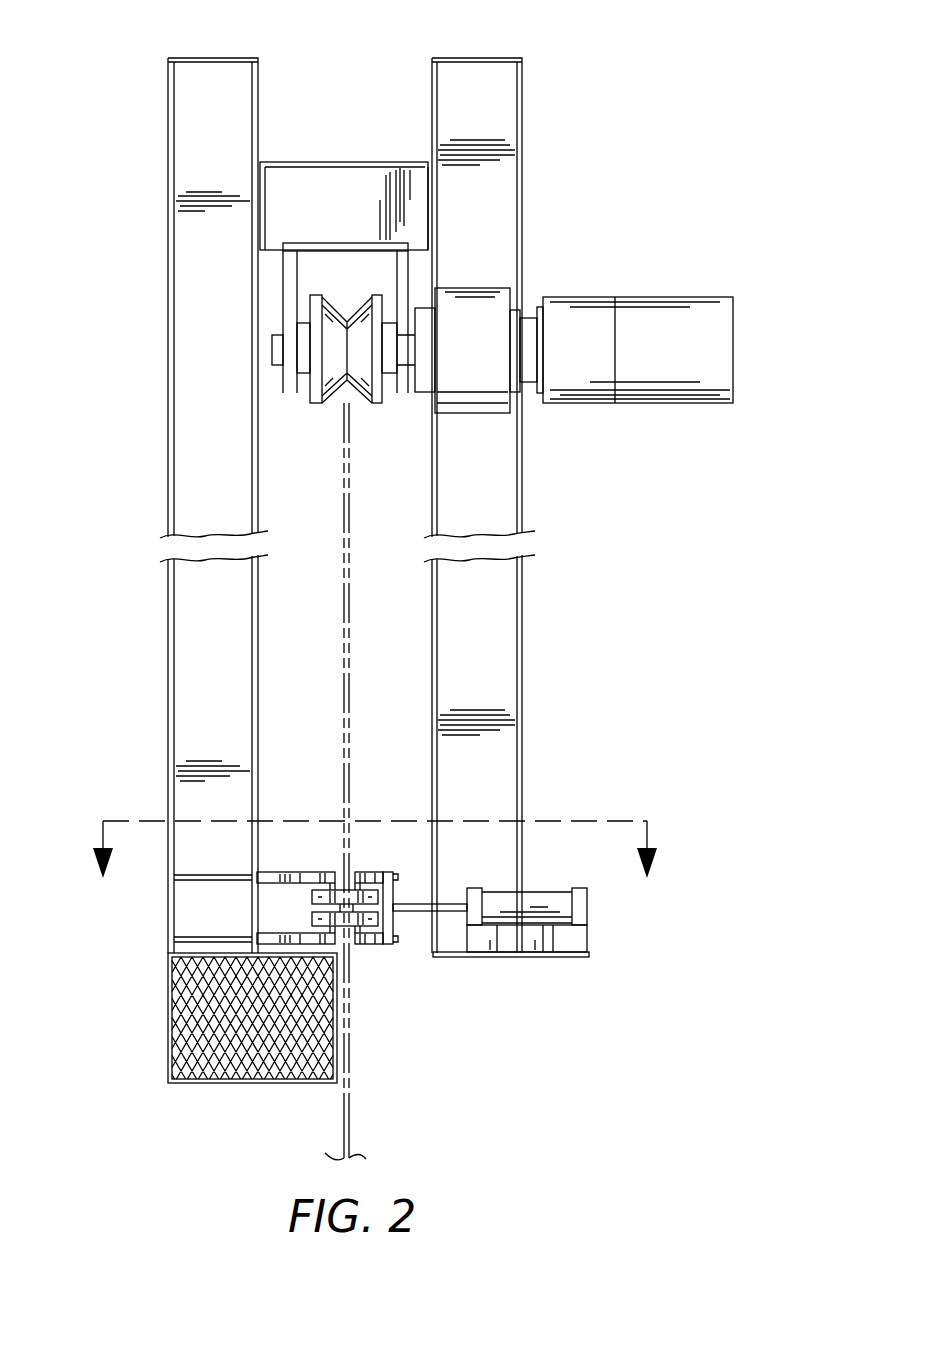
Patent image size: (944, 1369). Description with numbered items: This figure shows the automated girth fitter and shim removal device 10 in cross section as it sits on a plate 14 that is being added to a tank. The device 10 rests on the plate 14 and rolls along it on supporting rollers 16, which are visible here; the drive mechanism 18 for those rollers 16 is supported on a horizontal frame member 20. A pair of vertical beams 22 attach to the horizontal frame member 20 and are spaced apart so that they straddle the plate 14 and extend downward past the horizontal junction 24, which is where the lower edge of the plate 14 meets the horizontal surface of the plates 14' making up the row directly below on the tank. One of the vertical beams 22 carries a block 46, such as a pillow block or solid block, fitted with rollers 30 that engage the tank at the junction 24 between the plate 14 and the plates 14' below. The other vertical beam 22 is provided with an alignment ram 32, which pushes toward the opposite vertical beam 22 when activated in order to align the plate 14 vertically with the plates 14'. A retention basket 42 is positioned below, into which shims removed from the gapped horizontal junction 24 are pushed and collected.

The automated girth fitter and shim removal device 10 is at (616, 68).
The vertical beams 22 is at (168, 307).
The horizontal frame member 20 is at (313, 162).
The supporting rollers 16 is at (380, 405).
The drive mechanism 18 is at (715, 334).
The plate 14 is at (376, 749).
The plates 14' is at (399, 1127).
The block 46 is at (280, 872).
The rollers 30 is at (312, 900).
The horizontal junction 24 is at (345, 908).
The alignment ram 32 is at (554, 897).
The retention basket 42 is at (185, 1018).